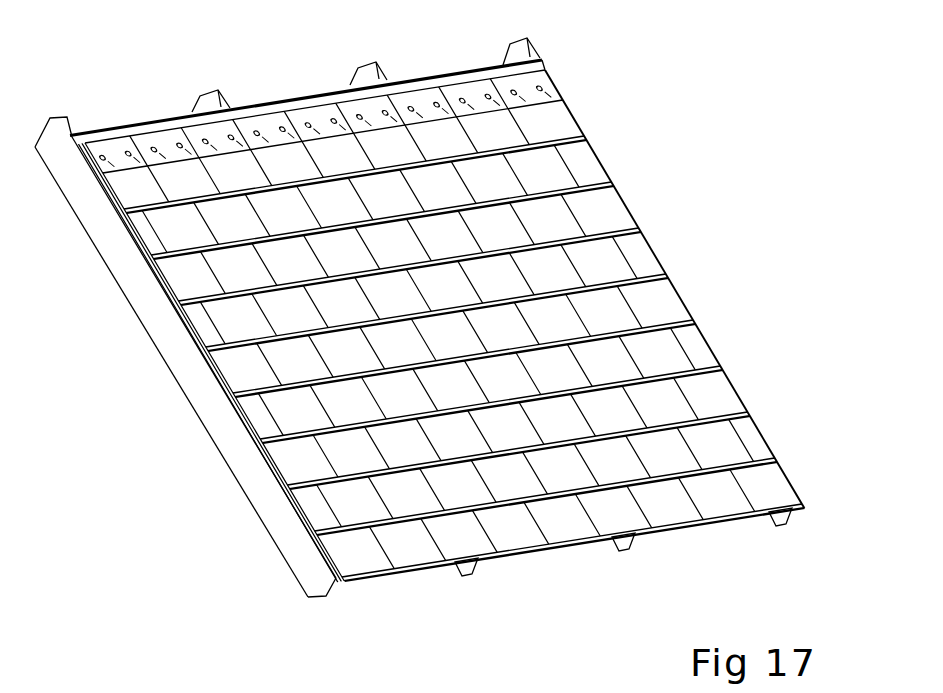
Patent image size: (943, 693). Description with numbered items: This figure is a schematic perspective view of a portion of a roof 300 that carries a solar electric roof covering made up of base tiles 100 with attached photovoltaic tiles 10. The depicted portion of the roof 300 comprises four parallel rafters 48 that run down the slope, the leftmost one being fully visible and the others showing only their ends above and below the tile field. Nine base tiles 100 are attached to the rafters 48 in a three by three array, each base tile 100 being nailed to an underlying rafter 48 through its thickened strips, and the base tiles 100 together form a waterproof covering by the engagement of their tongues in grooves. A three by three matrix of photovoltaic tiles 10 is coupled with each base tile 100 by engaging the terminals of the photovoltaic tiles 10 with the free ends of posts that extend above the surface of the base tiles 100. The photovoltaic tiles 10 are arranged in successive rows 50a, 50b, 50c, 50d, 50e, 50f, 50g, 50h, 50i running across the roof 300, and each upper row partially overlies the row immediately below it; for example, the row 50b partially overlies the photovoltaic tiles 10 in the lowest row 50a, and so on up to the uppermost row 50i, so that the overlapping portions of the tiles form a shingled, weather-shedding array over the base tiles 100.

The roof 300 is at (150, 372).
The base tile 100 is at (142, 132).
The rafter 48 is at (236, 478).
The photovoltaic tile 10 is at (349, 570).
The row of photovoltaic tiles 50a is at (790, 480).
The row of photovoltaic tiles 50b is at (763, 433).
The row of photovoltaic tiles 50c is at (733, 387).
The row of photovoltaic tiles 50d is at (705, 342).
The row of photovoltaic tiles 50e is at (677, 293).
The row of photovoltaic tiles 50f is at (650, 252).
The row of photovoltaic tiles 50g is at (627, 210).
The row of photovoltaic tiles 50h is at (602, 167).
The row of photovoltaic tiles 50i is at (573, 118).